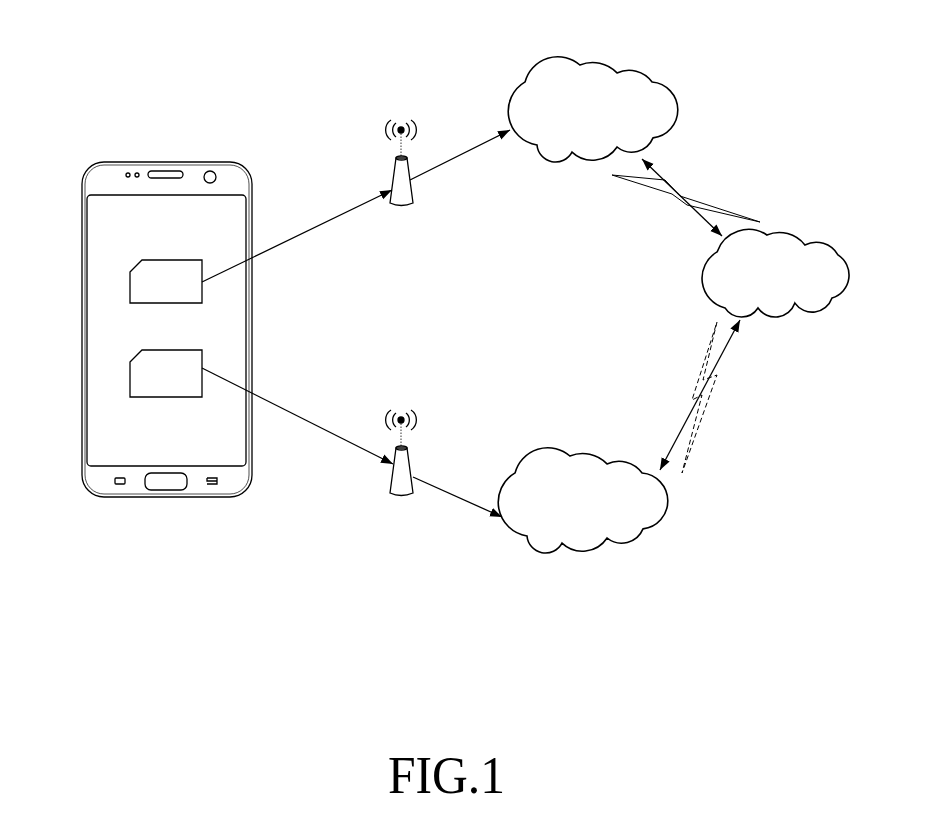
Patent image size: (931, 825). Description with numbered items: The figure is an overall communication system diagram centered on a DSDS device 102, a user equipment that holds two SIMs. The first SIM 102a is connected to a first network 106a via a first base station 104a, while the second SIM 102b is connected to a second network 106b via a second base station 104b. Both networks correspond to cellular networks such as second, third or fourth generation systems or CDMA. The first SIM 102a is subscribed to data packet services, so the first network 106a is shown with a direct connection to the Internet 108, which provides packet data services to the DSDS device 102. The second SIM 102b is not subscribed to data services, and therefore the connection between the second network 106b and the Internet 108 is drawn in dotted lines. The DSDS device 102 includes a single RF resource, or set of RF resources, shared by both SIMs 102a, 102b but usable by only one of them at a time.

The DSDS device 102 is at (112, 146).
The first SIM 102a is at (174, 258).
The second SIM 102b is at (174, 348).
The first base station 104a is at (401, 125).
The second base station 104b is at (401, 416).
The first network 106a is at (597, 58).
The second network 106b is at (588, 552).
The Internet 108 is at (802, 234).